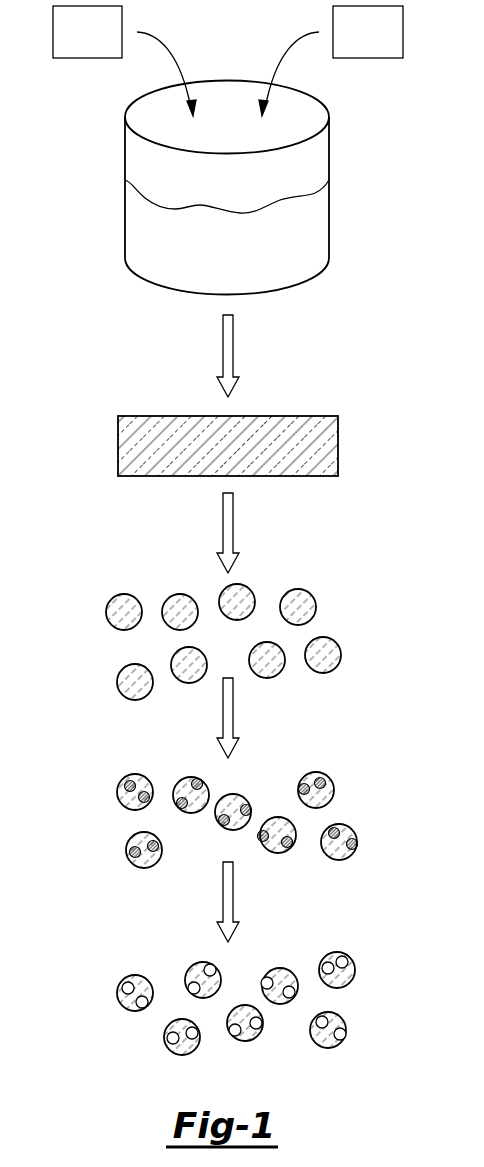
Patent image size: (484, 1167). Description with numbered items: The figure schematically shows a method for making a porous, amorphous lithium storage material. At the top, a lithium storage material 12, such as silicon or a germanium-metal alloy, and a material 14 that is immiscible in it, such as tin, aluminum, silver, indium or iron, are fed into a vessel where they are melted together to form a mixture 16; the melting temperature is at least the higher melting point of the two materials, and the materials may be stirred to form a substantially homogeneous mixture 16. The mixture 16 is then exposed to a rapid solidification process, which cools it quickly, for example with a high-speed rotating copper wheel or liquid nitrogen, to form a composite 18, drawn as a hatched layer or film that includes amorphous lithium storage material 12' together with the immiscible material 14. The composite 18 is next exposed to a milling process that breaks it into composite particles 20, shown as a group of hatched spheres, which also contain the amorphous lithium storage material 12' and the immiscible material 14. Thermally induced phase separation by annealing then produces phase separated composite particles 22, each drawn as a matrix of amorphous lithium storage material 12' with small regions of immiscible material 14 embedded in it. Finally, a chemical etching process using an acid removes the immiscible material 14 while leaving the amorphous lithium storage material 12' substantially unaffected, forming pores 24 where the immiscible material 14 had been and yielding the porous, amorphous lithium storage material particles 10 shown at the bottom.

The porous amorphous lithium storage material particles 10 is at (356, 918).
The lithium storage material 12 is at (124, 61).
The amorphous lithium storage material 12' is at (206, 741).
The immiscible material 14 is at (356, 44).
The mixture 16 is at (214, 264).
The composite 18 is at (356, 366).
The composite particles 20 is at (318, 612).
The phase separated composite particles 22 is at (114, 850).
The pores 24 is at (128, 988).